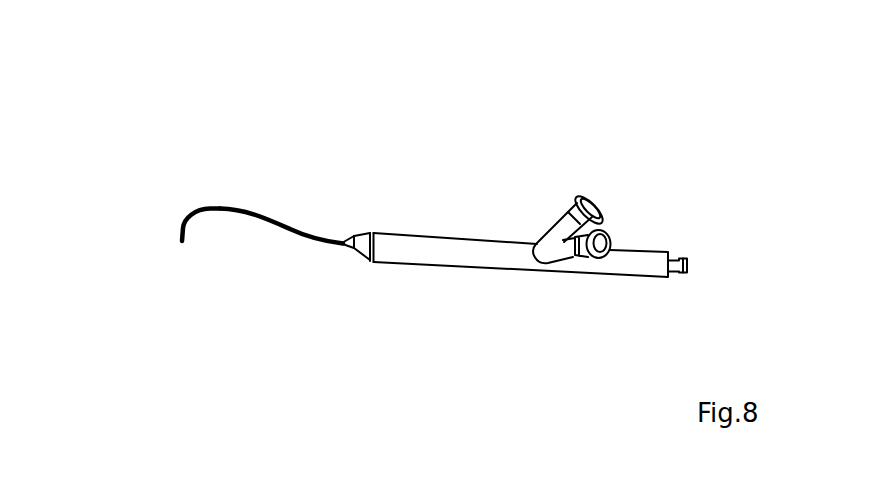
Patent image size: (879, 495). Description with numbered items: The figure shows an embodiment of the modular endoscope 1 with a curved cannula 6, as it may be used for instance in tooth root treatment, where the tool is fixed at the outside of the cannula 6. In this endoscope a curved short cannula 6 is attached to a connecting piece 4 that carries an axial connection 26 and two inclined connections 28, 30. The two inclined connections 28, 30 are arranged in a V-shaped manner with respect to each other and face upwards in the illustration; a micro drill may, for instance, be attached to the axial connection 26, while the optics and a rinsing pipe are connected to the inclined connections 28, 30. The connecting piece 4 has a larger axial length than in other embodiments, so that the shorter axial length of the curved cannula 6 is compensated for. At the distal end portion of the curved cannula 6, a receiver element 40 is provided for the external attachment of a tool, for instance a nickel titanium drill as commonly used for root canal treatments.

The modular endoscope 1 is at (382, 199).
The connecting piece 4 is at (463, 237).
The curved cannula 6 is at (220, 207).
The axial connection 26 is at (672, 278).
The inclined connection 28 is at (613, 230).
The inclined connection 30 is at (580, 197).
The receiver element 40 is at (181, 240).